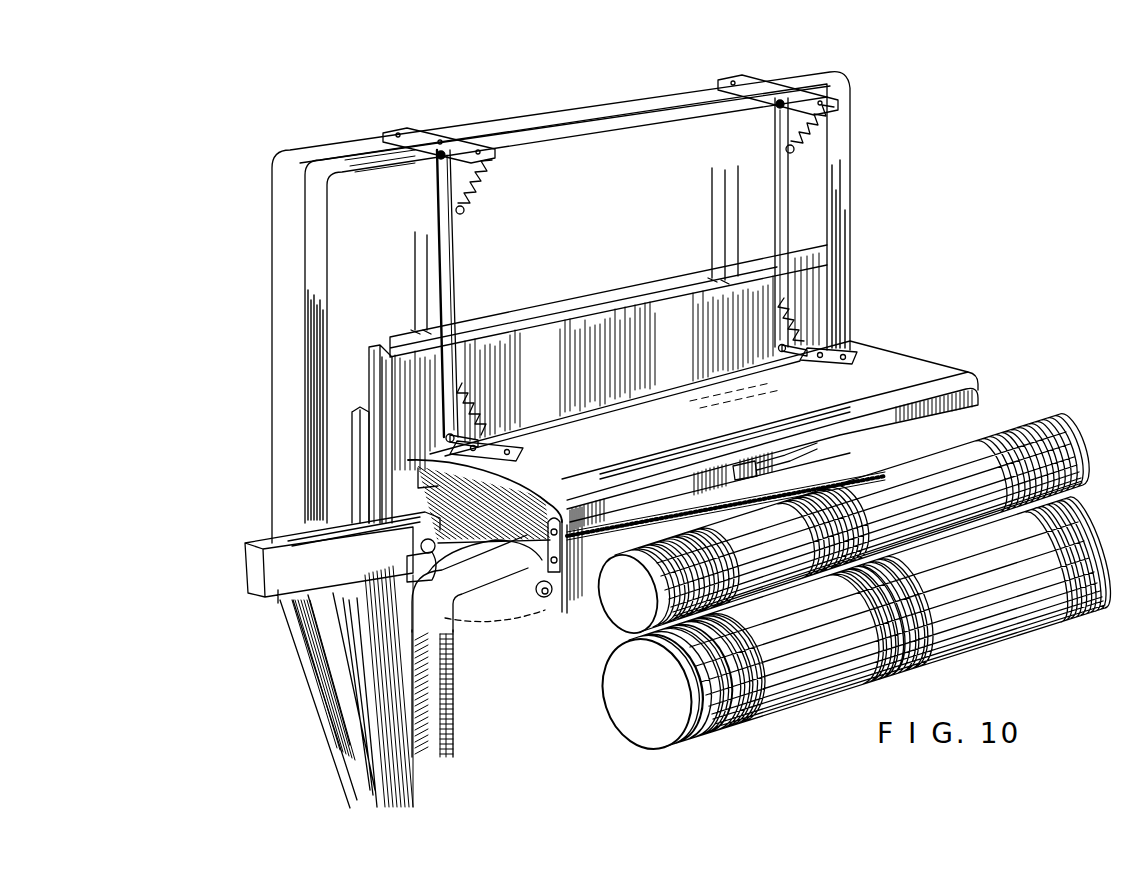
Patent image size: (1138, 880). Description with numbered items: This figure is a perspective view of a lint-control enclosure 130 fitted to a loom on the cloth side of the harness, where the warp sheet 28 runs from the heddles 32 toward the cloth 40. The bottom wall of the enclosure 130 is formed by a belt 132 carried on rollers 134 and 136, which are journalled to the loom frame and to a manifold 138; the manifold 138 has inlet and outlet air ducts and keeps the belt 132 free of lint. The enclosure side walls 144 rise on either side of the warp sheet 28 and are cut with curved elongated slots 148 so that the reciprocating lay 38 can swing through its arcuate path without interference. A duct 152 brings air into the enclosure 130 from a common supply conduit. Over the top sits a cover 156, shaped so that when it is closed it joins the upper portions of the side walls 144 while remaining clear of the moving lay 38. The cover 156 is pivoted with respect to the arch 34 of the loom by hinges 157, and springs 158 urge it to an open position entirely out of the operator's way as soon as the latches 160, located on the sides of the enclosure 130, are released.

The warp sheet 28 is at (513, 517).
The heddles 32 is at (352, 430).
The arch 34 is at (608, 108).
The lay 38 is at (497, 465).
The cloth 40 is at (935, 445).
The enclosure 130 is at (911, 352).
The belt 132 is at (540, 600).
The roller 134 is at (546, 600).
The roller 136 is at (300, 522).
The manifold 138 is at (410, 573).
The enclosure side walls 144 is at (488, 600).
The curved elongated slots 148 is at (530, 596).
The duct 152 is at (447, 712).
The cover 156 is at (907, 378).
The hinges 157 is at (437, 177).
The springs 158 is at (480, 182).
The latches 160 is at (552, 590).